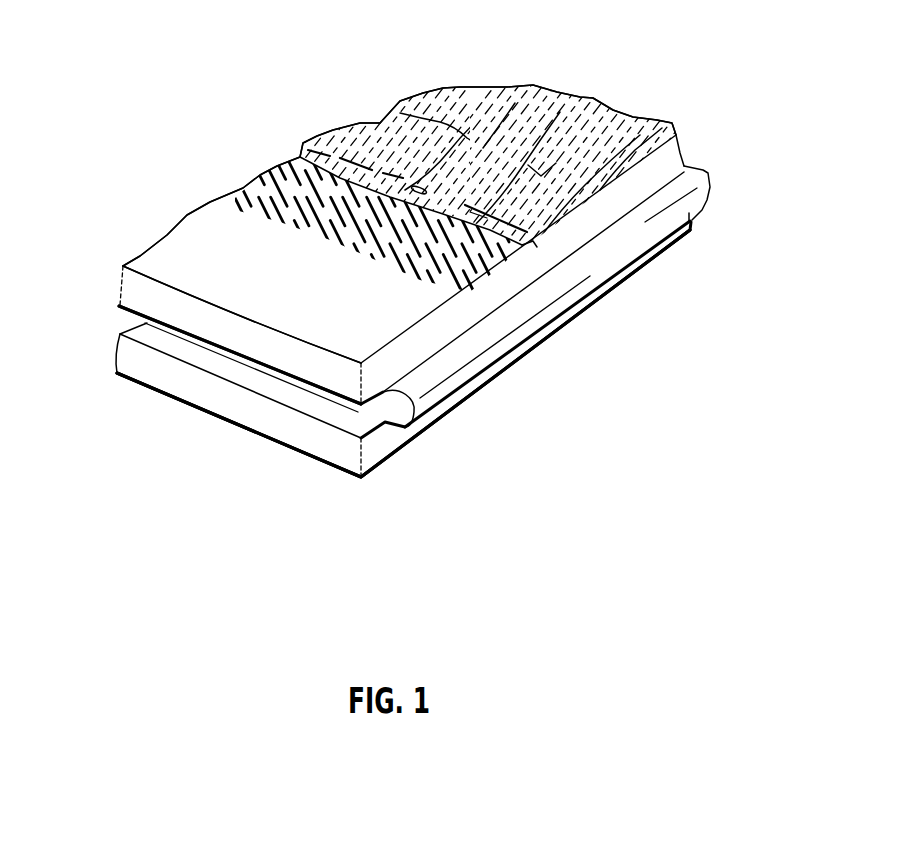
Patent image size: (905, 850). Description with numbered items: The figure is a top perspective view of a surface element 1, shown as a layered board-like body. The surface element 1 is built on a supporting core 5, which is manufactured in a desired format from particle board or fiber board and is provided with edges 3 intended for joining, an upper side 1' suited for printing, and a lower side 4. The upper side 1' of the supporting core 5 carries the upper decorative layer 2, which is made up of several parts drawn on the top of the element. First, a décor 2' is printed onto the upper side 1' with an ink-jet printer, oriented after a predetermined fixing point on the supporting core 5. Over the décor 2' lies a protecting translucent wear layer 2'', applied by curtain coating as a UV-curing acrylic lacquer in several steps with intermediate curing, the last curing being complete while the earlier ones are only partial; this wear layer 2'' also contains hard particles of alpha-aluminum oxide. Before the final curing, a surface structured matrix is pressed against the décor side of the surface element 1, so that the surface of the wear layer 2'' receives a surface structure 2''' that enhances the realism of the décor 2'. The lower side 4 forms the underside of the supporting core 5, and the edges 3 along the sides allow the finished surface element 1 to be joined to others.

The surface element 1 is at (465, 281).
The upper side 1' is at (398, 248).
The upper decorative layer 2 is at (536, 296).
The décor 2' is at (381, 197).
The translucent wear layer 2'' is at (406, 182).
The surface structure 2''' is at (600, 160).
The edges 3 is at (250, 410).
The lower side 4 is at (397, 486).
The supporting core 5 is at (133, 288).